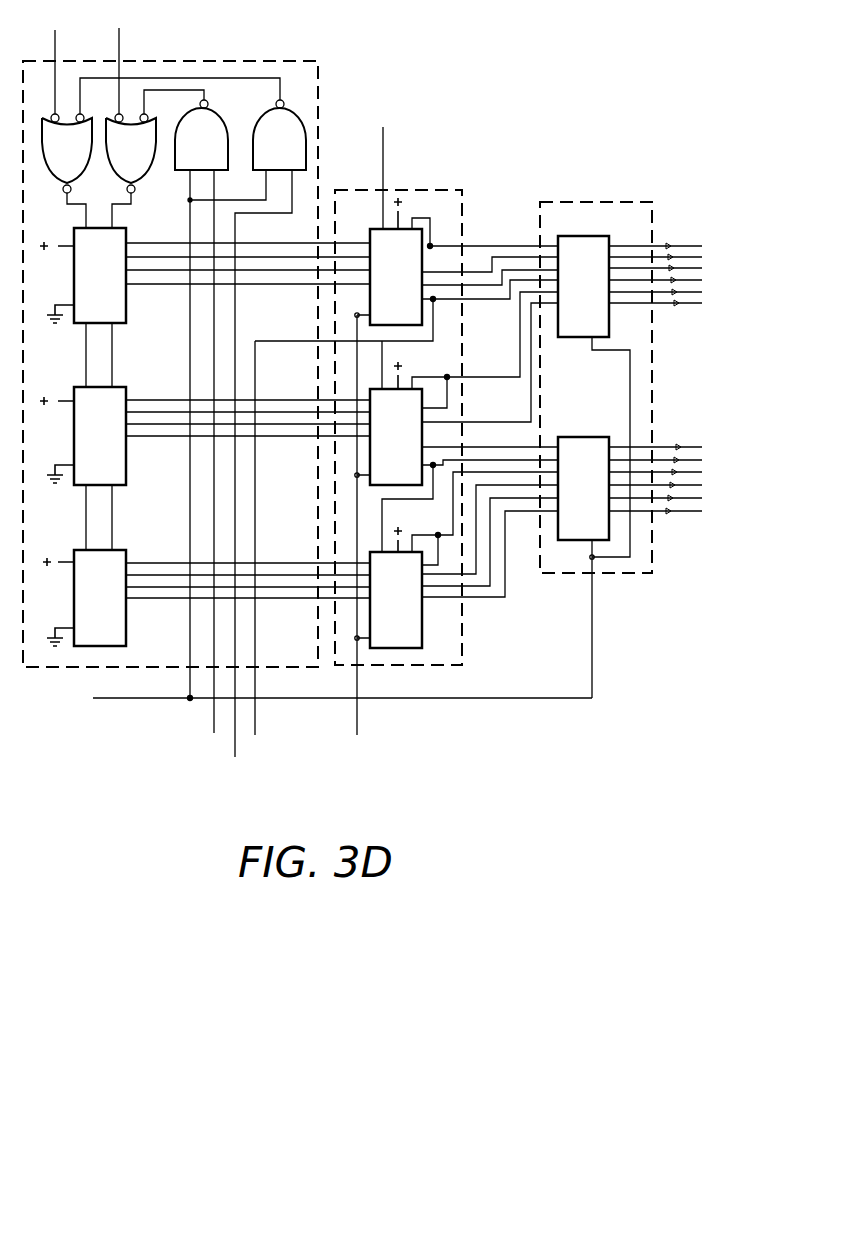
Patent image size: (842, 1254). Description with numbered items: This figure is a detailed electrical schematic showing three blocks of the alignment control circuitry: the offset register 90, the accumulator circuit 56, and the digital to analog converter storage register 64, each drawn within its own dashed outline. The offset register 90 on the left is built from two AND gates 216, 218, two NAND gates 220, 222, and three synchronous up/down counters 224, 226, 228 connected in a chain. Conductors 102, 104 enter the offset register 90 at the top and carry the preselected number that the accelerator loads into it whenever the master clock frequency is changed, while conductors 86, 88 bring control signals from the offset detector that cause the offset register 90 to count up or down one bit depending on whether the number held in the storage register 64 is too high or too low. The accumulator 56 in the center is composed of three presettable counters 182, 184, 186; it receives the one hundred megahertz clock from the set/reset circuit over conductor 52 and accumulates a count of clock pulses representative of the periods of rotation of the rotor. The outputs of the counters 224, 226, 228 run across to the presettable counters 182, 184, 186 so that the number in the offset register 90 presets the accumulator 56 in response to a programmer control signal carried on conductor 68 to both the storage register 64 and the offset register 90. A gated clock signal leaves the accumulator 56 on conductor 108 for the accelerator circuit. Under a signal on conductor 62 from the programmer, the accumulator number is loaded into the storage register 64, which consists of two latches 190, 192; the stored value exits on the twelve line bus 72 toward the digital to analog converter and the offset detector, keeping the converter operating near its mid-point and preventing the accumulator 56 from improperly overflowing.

The offset register 90 is at (345, 48).
The accumulator circuit 56 is at (436, 190).
The digital to analog converter storage register 64 is at (677, 190).
The conductor 104 is at (55, 47).
The conductor 102 is at (118, 50).
The AND gate 216 is at (67, 171).
The AND gate 218 is at (131, 171).
The NAND gate 220 is at (201, 135).
The NAND gate 222 is at (279, 135).
The synchronous up/down counter 224 is at (100, 275).
The synchronous up/down counter 226 is at (100, 436).
The synchronous up/down counter 228 is at (100, 598).
The presettable counter 182 is at (396, 277).
The presettable counter 184 is at (396, 437).
The presettable counter 186 is at (396, 600).
The latch 190 is at (583, 286).
The latch 192 is at (583, 488).
The 12 line bus 72 is at (668, 247).
The conductor 68 is at (138, 700).
The conductor 88 is at (213, 716).
The conductor 86 is at (235, 738).
The conductor 108 is at (255, 718).
The conductor 62 is at (357, 718).
The conductor 52 is at (383, 158).